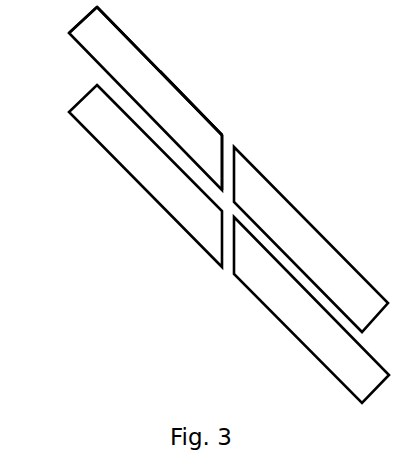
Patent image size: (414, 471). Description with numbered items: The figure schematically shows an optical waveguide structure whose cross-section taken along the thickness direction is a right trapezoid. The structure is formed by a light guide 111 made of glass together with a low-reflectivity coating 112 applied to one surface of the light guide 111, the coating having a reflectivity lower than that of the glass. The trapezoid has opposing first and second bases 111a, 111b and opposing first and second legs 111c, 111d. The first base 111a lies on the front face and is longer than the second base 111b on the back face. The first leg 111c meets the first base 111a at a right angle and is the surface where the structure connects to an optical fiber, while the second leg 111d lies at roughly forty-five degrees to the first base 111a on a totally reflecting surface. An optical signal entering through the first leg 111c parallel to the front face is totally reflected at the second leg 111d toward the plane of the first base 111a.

The light guide 111 is at (97, 32).
The low-reflectivity coating 112 is at (163, 72).
The first base 111a is at (100, 80).
The second base 111b is at (193, 101).
The first leg 111c is at (69, 33).
The second leg 111d is at (223, 144).